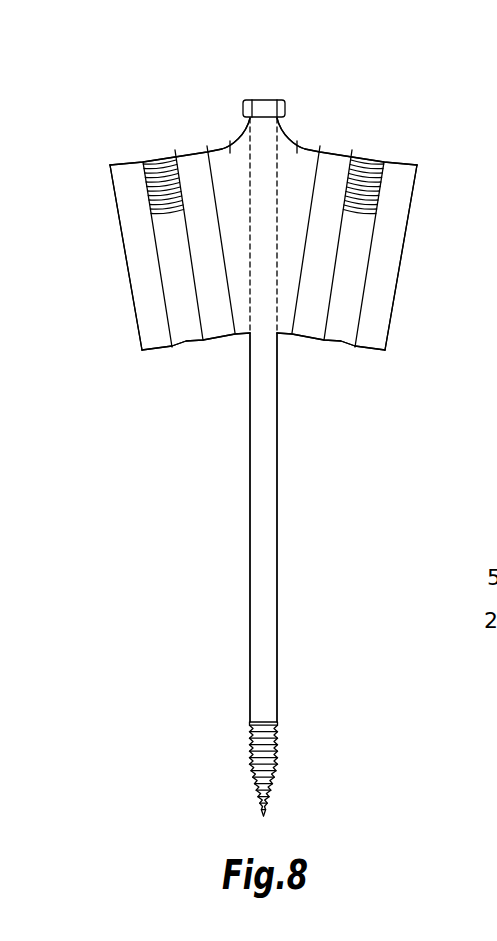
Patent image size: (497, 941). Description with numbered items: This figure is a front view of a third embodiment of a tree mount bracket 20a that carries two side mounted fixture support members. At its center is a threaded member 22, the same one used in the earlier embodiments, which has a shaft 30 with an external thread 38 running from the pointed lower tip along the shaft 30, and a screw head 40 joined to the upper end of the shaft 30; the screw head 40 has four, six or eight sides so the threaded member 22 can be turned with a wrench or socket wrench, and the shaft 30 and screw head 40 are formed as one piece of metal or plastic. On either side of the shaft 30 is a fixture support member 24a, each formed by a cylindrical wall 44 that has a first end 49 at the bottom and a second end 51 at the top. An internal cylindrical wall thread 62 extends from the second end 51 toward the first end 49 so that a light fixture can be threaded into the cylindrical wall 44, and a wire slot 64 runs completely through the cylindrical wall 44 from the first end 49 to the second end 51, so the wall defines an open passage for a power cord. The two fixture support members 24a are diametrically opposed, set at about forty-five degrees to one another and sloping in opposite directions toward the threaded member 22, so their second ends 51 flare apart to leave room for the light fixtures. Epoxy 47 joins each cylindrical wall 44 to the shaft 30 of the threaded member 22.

The tree mount bracket 20a is at (344, 115).
The threaded member 22 is at (272, 503).
The side mounted fixture support member 24a is at (128, 213).
The shaft 30 is at (272, 452).
The external thread 38 is at (275, 743).
The screw head 40 is at (262, 108).
The cylindrical wall 44 is at (140, 273).
The epoxy 47 is at (232, 153).
The first end 49 is at (157, 352).
The second end 51 is at (188, 160).
The internal cylindrical wall thread 62 is at (162, 167).
The wire slot 64 is at (188, 334).